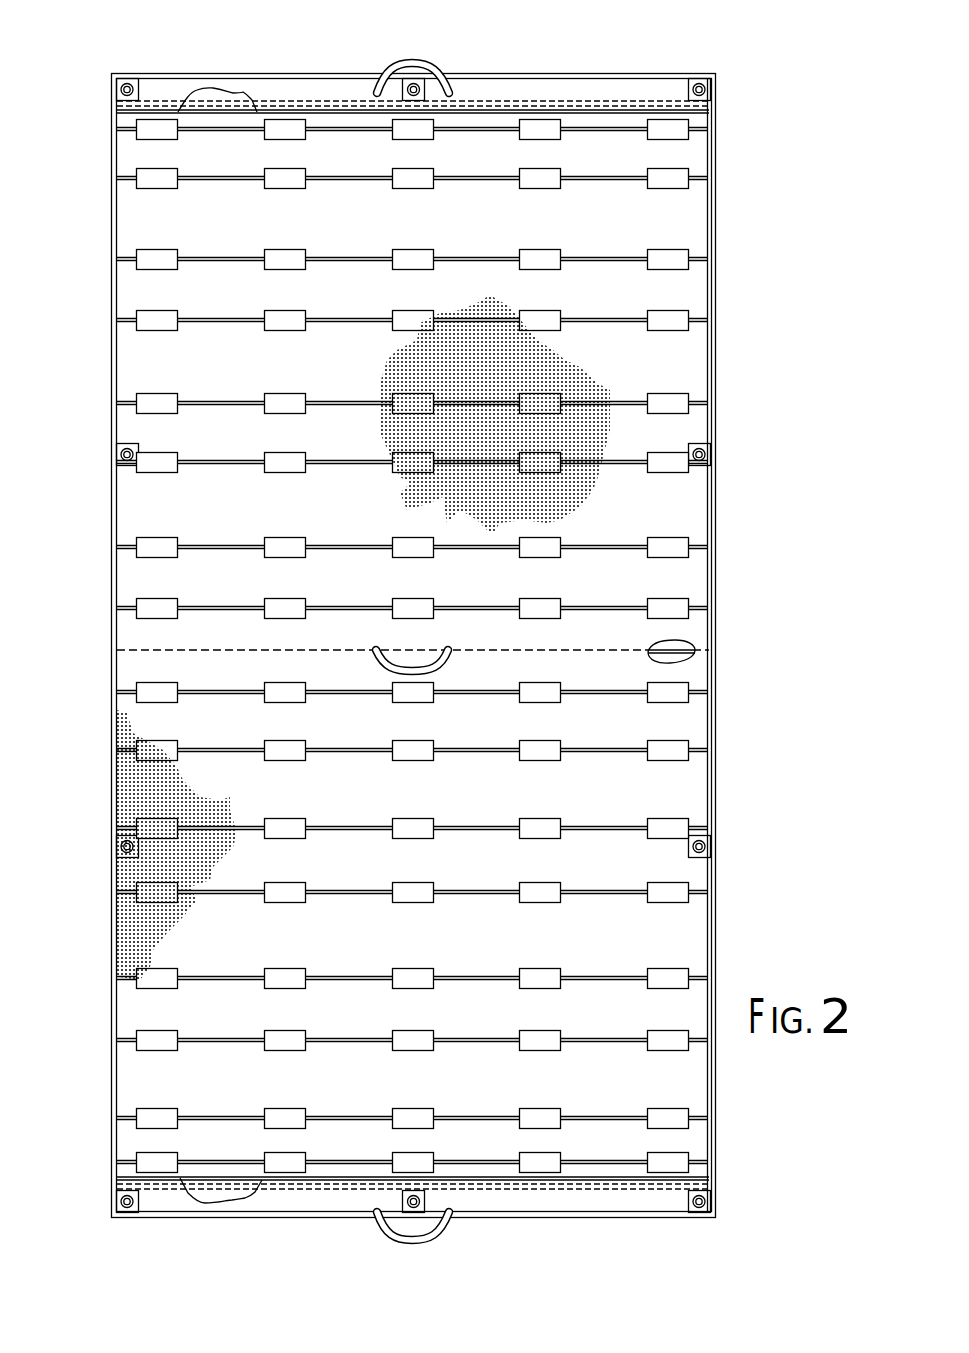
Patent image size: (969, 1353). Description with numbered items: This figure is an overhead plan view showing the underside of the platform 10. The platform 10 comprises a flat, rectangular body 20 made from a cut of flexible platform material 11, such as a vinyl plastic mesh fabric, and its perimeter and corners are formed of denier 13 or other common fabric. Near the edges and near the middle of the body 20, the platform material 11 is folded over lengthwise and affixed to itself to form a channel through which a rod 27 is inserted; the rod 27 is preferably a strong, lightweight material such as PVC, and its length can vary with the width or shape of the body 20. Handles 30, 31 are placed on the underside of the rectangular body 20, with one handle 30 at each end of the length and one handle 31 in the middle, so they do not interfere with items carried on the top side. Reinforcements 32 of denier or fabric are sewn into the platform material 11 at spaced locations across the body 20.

The platform 10 is at (768, 149).
The platform material 11 is at (668, 503).
The denier 13 is at (712, 678).
The rectangular body 20 is at (112, 238).
The rod 27 is at (217, 100).
The handle 30 is at (424, 62).
The handle 31 is at (383, 662).
The reinforcement 32 is at (148, 327).